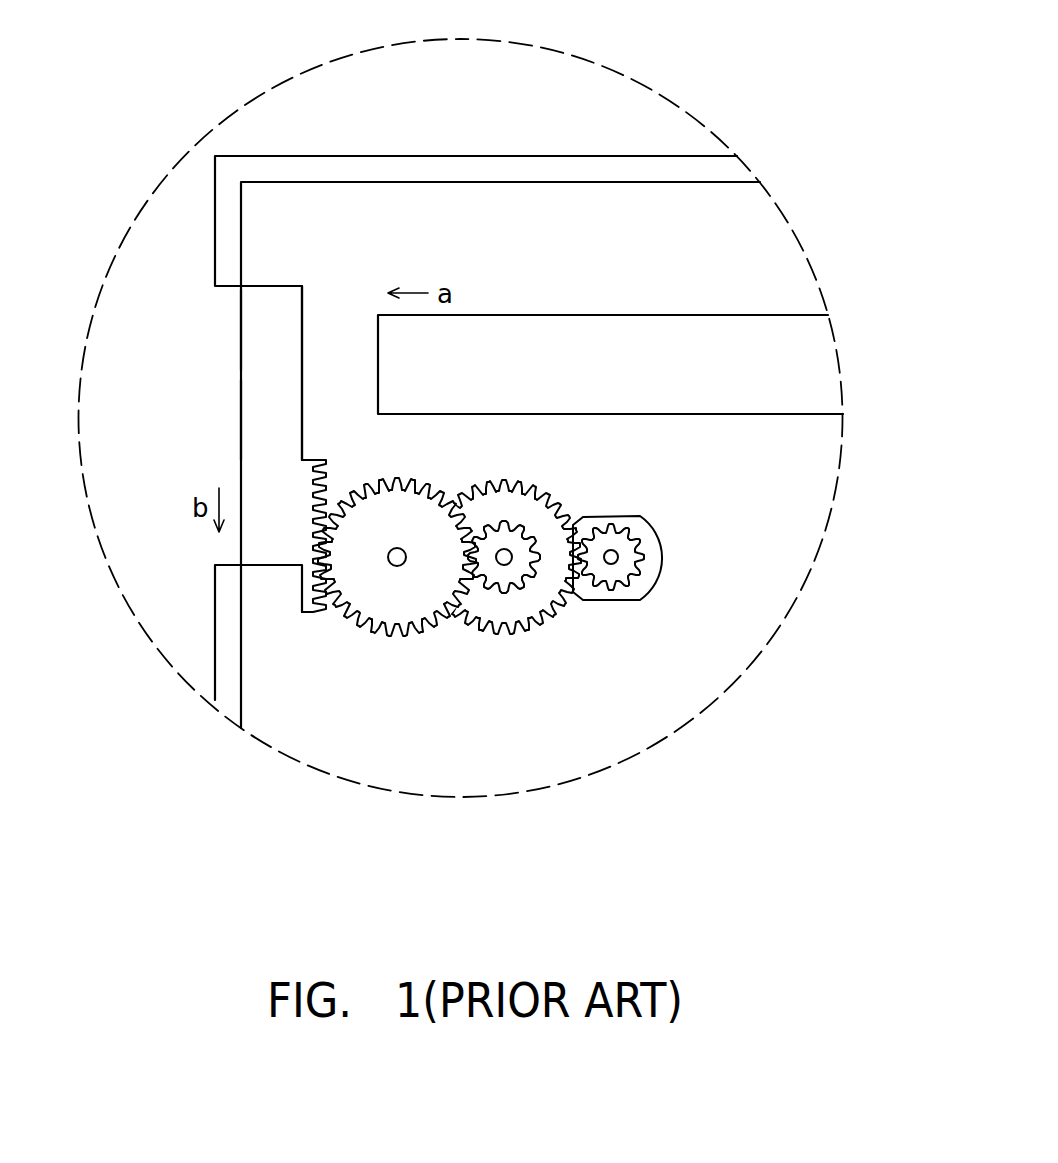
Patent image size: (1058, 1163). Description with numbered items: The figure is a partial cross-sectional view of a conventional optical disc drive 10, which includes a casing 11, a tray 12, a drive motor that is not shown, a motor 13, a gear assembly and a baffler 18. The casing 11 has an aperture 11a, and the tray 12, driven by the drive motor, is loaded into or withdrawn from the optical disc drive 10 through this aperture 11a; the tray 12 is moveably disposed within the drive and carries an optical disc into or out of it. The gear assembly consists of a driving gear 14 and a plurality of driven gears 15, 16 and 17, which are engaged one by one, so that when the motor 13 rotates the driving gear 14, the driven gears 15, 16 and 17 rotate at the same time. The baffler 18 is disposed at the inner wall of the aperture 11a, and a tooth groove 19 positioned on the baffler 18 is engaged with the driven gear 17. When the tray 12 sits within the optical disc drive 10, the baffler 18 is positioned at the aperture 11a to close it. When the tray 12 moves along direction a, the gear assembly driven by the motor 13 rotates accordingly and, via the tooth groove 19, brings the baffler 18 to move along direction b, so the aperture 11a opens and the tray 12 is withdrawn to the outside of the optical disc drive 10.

The optical disc drive 10 is at (651, 134).
The casing 11 is at (441, 168).
The aperture 11a is at (212, 310).
The tray 12 is at (662, 341).
The motor 13 is at (632, 519).
The driving gear 14 is at (610, 573).
The driven gear 15 is at (517, 567).
The driven gear 16 is at (507, 615).
The driven gear 17 is at (413, 608).
The baffler 18 is at (265, 313).
The tooth groove 19 is at (304, 613).